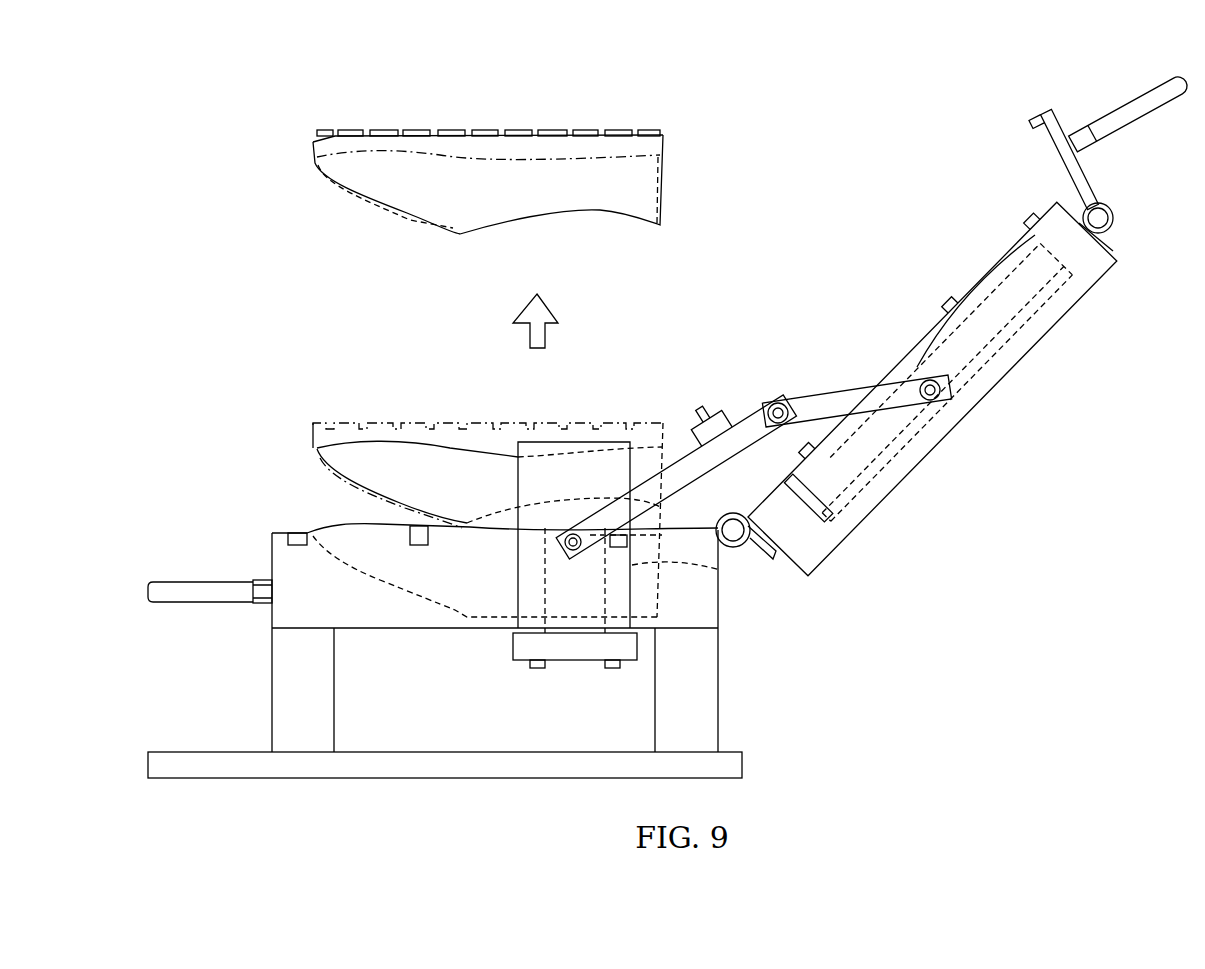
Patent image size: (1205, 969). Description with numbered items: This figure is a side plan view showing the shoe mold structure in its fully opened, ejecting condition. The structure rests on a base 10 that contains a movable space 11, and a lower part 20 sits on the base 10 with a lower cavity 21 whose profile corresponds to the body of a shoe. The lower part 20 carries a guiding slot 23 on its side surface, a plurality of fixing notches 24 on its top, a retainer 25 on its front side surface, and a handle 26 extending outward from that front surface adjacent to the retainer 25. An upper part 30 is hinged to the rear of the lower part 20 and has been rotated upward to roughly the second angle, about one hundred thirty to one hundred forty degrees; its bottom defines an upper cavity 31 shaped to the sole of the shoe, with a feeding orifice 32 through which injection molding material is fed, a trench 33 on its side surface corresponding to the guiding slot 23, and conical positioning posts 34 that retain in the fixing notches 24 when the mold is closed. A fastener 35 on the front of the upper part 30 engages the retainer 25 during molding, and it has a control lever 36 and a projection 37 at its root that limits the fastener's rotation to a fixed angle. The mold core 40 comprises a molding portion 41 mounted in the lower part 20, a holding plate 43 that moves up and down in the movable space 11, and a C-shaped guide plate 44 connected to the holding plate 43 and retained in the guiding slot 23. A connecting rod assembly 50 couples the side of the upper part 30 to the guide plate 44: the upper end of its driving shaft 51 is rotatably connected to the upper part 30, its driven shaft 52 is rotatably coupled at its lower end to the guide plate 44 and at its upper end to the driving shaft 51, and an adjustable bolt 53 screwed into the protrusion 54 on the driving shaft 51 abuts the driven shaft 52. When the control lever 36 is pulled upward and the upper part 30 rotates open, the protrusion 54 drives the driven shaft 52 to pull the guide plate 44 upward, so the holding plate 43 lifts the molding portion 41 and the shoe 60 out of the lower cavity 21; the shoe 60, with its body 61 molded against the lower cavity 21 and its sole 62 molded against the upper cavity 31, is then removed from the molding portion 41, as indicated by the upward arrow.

The base 10 is at (207, 757).
The movable space 11 is at (437, 717).
The lower part 20 is at (278, 562).
The lower cavity 21 is at (380, 540).
The guiding slot 23 is at (720, 570).
The fixing notch 24 is at (293, 537).
The retainer 25 is at (252, 603).
The handle 26 is at (153, 590).
The upper part 30 is at (1028, 345).
The upper cavity 31 is at (920, 357).
The feeding orifice 32 is at (967, 413).
The trench 33 is at (903, 467).
The conical positioning post 34 is at (953, 300).
The fastener 35 is at (1090, 171).
The control lever 36 is at (1125, 108).
The projection 37 is at (1098, 237).
The mold core 40 is at (424, 398).
The molding portion 41 is at (457, 460).
The holding plate 43 is at (573, 653).
The guide plate 44 is at (556, 447).
The connecting rod assembly 50 is at (709, 361).
The driving shaft 51 is at (815, 403).
The driven shaft 52 is at (685, 462).
The adjustable bolt 53 is at (708, 408).
The protrusion 54 is at (730, 410).
The shoe 60 is at (345, 212).
The body 61 is at (655, 183).
The sole 62 is at (575, 135).